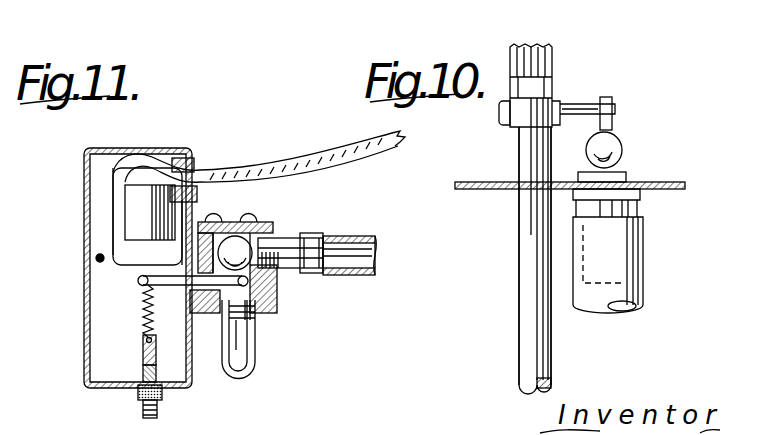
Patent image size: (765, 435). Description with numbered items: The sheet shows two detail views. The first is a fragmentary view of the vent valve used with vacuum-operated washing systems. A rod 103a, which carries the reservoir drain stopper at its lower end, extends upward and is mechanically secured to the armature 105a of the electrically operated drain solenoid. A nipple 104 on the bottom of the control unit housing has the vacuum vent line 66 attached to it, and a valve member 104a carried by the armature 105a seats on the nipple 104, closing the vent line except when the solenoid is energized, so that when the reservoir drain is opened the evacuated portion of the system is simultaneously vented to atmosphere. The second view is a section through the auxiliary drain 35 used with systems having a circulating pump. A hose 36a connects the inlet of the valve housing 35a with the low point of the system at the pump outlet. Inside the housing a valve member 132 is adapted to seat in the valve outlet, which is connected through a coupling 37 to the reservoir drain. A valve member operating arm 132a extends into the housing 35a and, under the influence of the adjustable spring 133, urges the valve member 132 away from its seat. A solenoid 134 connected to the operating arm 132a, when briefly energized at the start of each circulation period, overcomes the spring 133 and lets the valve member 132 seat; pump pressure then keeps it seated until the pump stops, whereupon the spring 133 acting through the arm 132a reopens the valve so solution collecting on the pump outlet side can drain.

In FIG. 11, the auxiliary drain 35 is at (82, 166).
In FIG. 11, the valve housing 35a is at (277, 236).
In FIG. 11, the hose 36a is at (350, 240).
In FIG. 11, the coupling 37 is at (254, 357).
In FIG. 10, the vacuum vent line 66 is at (645, 290).
In FIG. 10, the rod 103a is at (527, 282).
In FIG. 10, the nipple 104 is at (643, 208).
In FIG. 10, the valve member 104a is at (622, 145).
In FIG. 10, the armature 105a is at (556, 57).
In FIG. 11, the valve member 132 is at (234, 242).
In FIG. 11, the valve member operating arm 132a is at (175, 290).
In FIG. 11, the adjustable spring 133 is at (146, 320).
In FIG. 11, the solenoid 134 is at (128, 214).